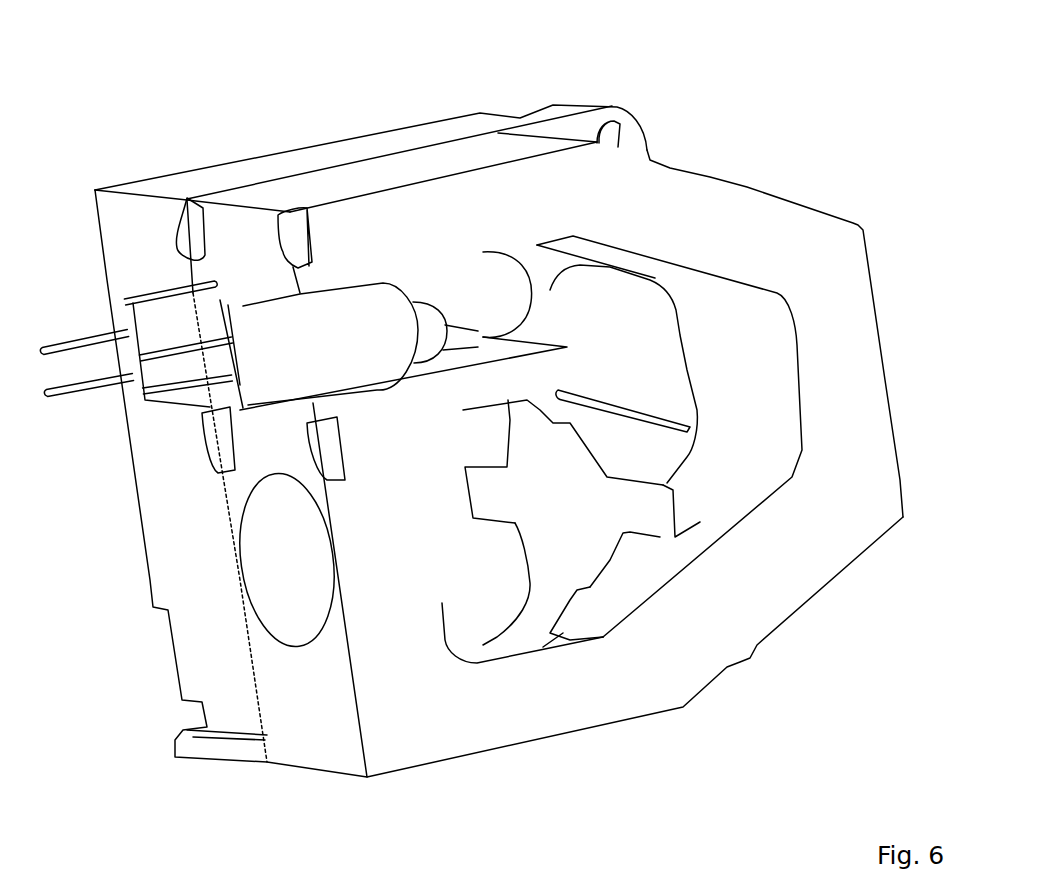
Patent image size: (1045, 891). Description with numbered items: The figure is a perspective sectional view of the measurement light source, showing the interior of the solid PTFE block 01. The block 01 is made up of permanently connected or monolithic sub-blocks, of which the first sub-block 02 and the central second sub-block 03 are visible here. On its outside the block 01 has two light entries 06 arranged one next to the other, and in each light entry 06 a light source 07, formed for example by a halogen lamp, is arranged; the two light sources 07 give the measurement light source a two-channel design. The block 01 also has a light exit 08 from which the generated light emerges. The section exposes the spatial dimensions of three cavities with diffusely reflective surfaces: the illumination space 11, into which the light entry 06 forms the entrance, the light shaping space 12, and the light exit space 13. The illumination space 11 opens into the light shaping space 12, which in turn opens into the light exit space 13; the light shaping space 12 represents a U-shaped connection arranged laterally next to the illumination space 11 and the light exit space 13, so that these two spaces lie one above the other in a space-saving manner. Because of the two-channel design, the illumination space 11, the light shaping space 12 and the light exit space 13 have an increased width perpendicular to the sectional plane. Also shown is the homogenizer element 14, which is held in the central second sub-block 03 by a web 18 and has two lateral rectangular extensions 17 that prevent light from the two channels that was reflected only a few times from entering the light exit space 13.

The block 01 is at (507, 740).
The first sub-block 02 is at (413, 130).
The second sub-block 03 is at (788, 222).
The light entry 06 is at (293, 296).
The light source 07 is at (160, 312).
The light exit 08 is at (287, 567).
The illumination space 11 is at (470, 290).
The light shaping space 12 is at (723, 383).
The light exit space 13 is at (470, 562).
The homogenizer element 14 is at (648, 513).
The lateral rectangular extensions 17 is at (490, 493).
The web 18 is at (598, 590).